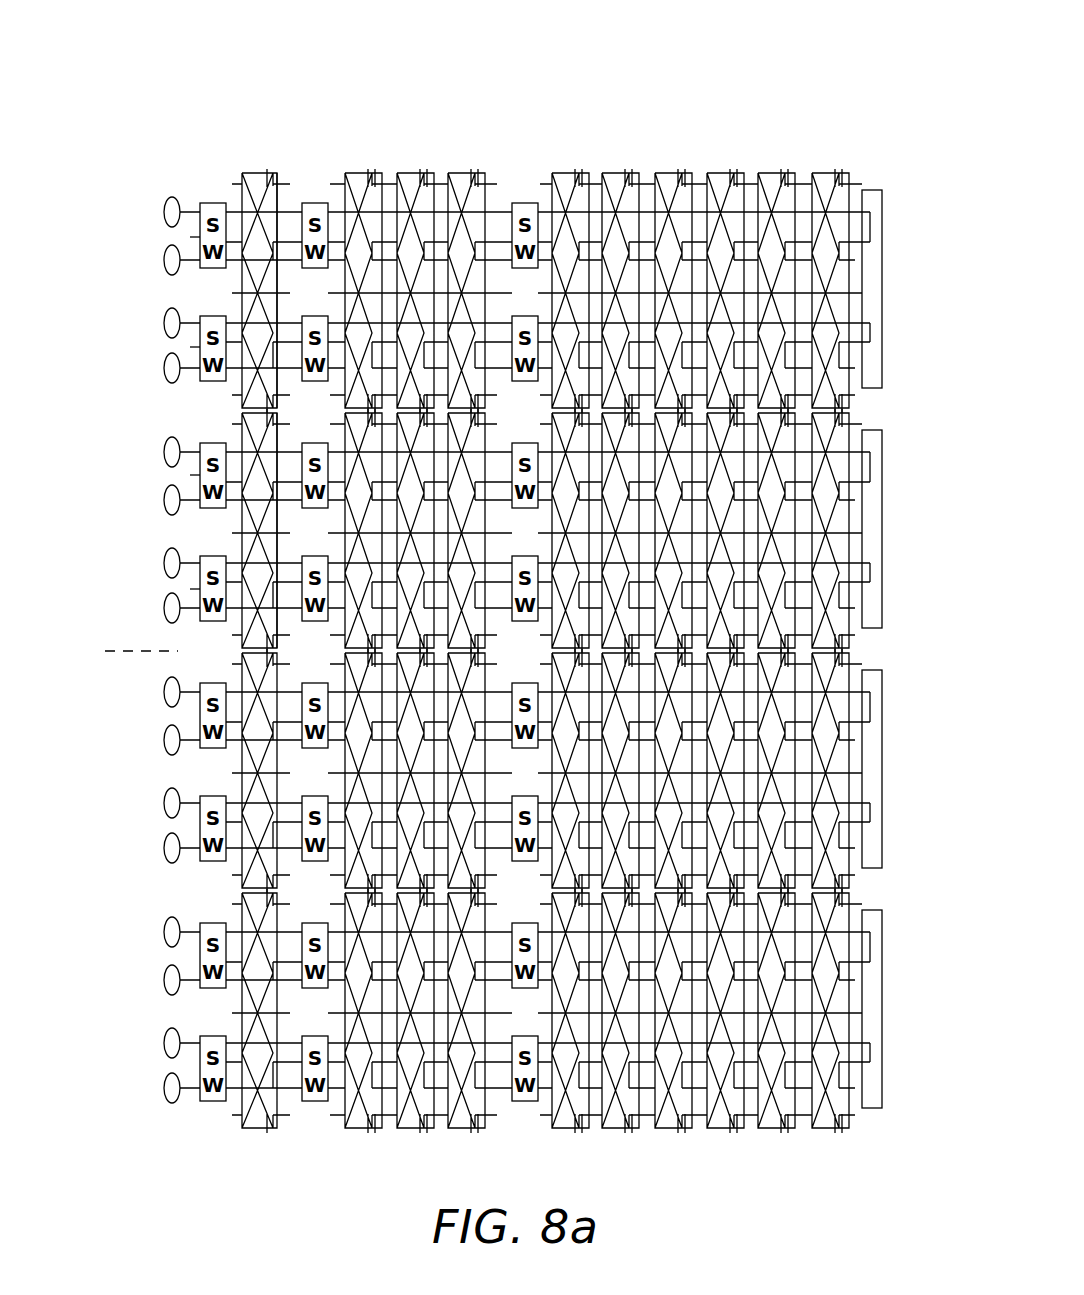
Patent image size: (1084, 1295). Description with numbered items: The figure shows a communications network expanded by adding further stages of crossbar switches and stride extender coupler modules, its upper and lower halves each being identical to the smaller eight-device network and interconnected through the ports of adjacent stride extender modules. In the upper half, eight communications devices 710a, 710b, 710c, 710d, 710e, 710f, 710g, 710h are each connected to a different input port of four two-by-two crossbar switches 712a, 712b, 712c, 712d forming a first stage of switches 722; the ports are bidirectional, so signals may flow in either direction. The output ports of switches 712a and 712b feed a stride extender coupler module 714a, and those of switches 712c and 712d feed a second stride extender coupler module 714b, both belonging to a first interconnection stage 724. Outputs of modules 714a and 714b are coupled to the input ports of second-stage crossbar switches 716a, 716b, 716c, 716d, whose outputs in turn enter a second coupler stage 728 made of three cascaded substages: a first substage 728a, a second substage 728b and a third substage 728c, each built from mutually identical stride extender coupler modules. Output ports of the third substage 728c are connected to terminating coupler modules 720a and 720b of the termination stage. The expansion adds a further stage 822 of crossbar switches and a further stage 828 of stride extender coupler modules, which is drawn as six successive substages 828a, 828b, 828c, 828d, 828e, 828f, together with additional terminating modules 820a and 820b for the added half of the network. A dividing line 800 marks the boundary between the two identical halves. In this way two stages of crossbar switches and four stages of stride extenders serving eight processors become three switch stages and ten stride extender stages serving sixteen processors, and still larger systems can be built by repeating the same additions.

The communication device 710a is at (172, 197).
The communication device 710b is at (164, 260).
The communication device 710c is at (164, 323).
The communication device 710d is at (164, 368).
The communication device 710e is at (164, 452).
The communication device 710f is at (164, 500).
The communication device 710g is at (164, 563).
The communication device 710h is at (164, 608).
The crossbar switch 712a is at (200, 237).
The crossbar switch 712b is at (200, 347).
The crossbar switch 712c is at (200, 475).
The crossbar switch 712d is at (200, 589).
The stride extender coupler module 714a is at (273, 173).
The stride extender coupler module 714b is at (240, 427).
The crossbar switch 716a is at (315, 203).
The crossbar switch 716b is at (306, 316).
The crossbar switch 716c is at (312, 443).
The crossbar switch 716d is at (308, 556).
The terminating coupler module 720a is at (881, 190).
The terminating coupler module 720b is at (882, 431).
The first stage of switches 722 is at (212, 150).
The first interconnection stage 724 is at (252, 150).
The second coupler stage 728 is at (419, 582).
The first substage 728a is at (361, 150).
The second substage 728b is at (417, 150).
The third substage 728c is at (465, 150).
The partition line 800 is at (150, 654).
The output bus 820a is at (882, 671).
The output bus 820b is at (889, 906).
The further stage of crossbar switches 822 is at (528, 150).
The further stage of stride extender coupling circuits 828 is at (731, 567).
The crossbar column 828a is at (571, 148).
The crossbar column 828b is at (628, 148).
The crossbar column 828c is at (677, 148).
The crossbar column 828d is at (730, 148).
The crossbar column 828e is at (779, 148).
The crossbar column 828f is at (861, 615).